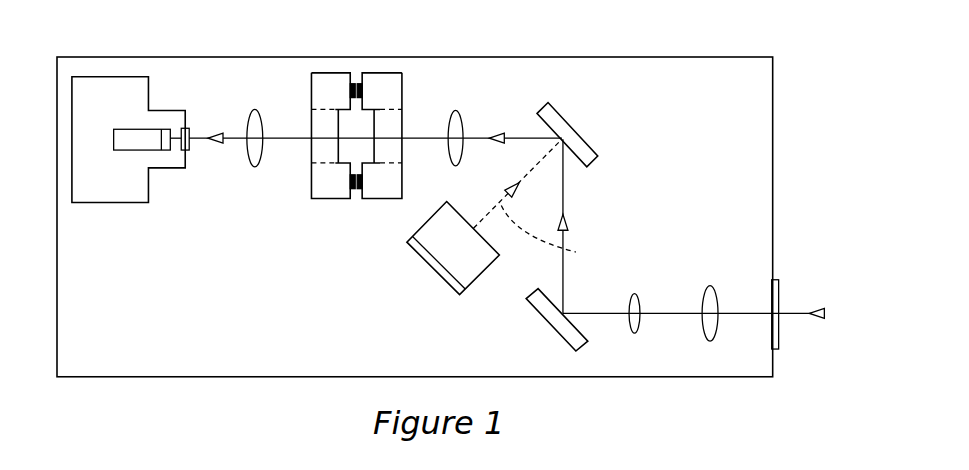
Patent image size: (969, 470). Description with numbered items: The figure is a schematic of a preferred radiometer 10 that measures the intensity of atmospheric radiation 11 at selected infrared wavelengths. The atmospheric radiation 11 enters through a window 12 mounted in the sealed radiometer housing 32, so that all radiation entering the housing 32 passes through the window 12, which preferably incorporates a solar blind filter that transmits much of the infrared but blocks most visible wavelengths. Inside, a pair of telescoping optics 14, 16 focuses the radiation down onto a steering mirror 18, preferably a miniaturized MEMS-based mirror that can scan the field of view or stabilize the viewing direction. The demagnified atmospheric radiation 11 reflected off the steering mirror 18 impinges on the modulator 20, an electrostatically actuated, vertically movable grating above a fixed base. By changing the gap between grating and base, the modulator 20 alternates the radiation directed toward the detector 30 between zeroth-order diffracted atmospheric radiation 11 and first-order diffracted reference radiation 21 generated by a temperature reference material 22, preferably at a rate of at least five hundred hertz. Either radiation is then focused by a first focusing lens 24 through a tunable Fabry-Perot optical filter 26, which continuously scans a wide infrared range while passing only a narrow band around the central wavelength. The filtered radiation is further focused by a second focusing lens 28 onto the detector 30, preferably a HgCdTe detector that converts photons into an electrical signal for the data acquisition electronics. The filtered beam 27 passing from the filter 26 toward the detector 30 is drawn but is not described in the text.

The radiometer 10 is at (718, 40).
The atmospheric radiation 11 is at (812, 318).
The window 12 is at (779, 292).
The telescoping optic 14 is at (712, 327).
The telescoping optic 16 is at (635, 325).
The steering mirror 18 is at (583, 342).
The modulator 20 is at (557, 110).
The reference radiation 21 is at (569, 250).
The temperature reference material 22 is at (431, 270).
The first focusing lens 24 is at (452, 110).
The Fabry-Perot optical filter 26 is at (383, 75).
The filtered beam 27 is at (222, 131).
The second focusing lens 28 is at (254, 118).
The detector 30 is at (185, 125).
The radiometer housing 32 is at (64, 53).